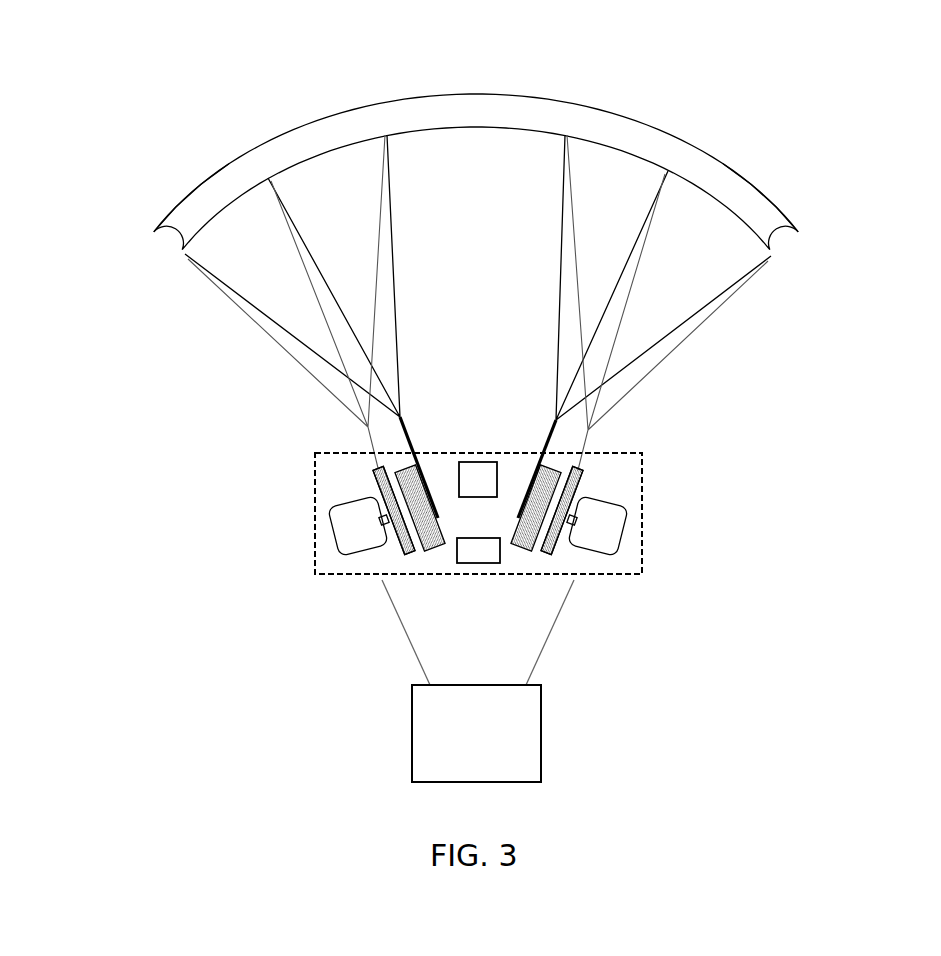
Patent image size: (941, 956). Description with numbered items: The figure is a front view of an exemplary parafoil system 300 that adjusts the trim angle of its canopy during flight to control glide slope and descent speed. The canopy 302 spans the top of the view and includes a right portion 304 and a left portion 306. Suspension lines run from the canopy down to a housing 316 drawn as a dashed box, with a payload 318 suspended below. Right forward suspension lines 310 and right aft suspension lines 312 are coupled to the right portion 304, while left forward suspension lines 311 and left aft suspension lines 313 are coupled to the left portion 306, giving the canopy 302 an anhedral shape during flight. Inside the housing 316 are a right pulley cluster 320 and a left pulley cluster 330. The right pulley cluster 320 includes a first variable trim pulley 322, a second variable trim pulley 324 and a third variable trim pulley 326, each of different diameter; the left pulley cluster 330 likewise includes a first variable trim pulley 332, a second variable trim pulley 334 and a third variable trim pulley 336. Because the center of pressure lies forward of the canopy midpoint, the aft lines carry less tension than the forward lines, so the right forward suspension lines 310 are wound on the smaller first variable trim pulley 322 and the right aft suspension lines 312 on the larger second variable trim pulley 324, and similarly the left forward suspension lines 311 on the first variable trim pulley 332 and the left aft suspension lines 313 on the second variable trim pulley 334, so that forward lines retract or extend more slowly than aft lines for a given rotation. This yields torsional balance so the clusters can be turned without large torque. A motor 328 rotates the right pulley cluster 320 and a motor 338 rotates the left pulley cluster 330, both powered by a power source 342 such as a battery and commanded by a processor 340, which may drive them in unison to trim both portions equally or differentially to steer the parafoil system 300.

The parafoil system 300 is at (829, 71).
The canopy 302 is at (533, 117).
The right portion 304 is at (207, 190).
The left portion 306 is at (742, 195).
The right forward suspension lines 310 is at (403, 438).
The left forward suspension lines 311 is at (553, 440).
The right aft suspension lines 312 is at (368, 427).
The left aft suspension lines 313 is at (587, 430).
The housing 316 is at (315, 483).
The payload 318 is at (412, 748).
The right pulley cluster 320 is at (397, 542).
The first variable trim pulley 322 is at (438, 520).
The second variable trim pulley 324 is at (375, 475).
The third variable trim pulley 326 is at (425, 537).
The motor 328 is at (350, 527).
The left pulley cluster 330 is at (560, 548).
The first variable trim pulley 332 is at (518, 520).
The second variable trim pulley 334 is at (577, 487).
The third variable trim pulley 336 is at (531, 540).
The motor 338 is at (598, 528).
The processor 340 is at (486, 462).
The power source 342 is at (473, 563).